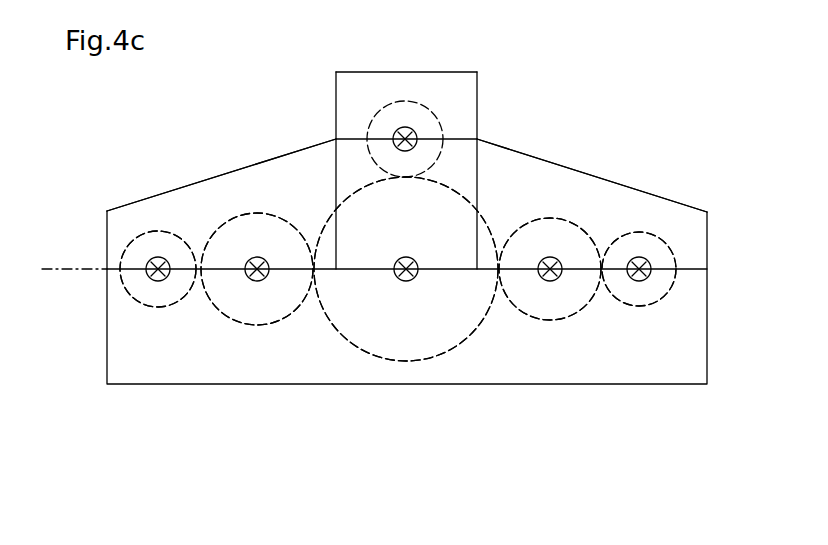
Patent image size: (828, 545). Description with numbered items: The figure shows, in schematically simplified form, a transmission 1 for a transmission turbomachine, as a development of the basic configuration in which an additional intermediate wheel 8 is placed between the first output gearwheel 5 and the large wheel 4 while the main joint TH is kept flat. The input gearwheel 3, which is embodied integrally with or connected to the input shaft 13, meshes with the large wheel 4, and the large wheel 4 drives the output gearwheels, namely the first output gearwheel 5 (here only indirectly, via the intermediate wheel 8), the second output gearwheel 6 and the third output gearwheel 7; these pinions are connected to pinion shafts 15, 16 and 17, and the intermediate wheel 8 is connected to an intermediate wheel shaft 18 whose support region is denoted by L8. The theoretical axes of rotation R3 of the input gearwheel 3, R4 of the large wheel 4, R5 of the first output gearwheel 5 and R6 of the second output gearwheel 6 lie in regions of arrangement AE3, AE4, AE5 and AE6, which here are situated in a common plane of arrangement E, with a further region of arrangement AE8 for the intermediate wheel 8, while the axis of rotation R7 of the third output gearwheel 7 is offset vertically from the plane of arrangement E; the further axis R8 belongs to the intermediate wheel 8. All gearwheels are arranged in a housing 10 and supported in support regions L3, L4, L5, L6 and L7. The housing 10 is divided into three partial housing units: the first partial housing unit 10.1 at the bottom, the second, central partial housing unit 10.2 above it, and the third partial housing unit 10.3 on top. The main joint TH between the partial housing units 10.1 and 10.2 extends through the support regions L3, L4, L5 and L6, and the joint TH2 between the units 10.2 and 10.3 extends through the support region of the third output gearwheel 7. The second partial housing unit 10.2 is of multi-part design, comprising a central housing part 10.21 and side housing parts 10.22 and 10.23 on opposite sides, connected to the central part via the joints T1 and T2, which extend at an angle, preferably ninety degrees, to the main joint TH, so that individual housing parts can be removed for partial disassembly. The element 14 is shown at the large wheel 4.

The transmission 1 is at (587, 85).
The input gearwheel 3 is at (592, 294).
The large wheel 4 is at (463, 313).
The first output gearwheel 5 is at (193, 290).
The second output gearwheel 6 is at (674, 284).
The third output gearwheel 7 is at (471, 112).
The intermediate wheel 8 is at (302, 295).
The housing 10 is at (169, 151).
The first partial housing unit 10.1 is at (342, 384).
The second partial housing unit 10.2 is at (616, 150).
The central housing part 10.21 is at (352, 167).
The side housing part 10.22 is at (222, 200).
The side housing part 10.23 is at (570, 196).
The third partial housing unit 10.3 is at (477, 113).
The input shaft 13 is at (559, 278).
The center of fourth opening 14 is at (415, 278).
The pinion shaft 15 is at (167, 278).
The pinion shaft 16 is at (648, 278).
The pinion shaft 17 is at (446, 115).
The intermediate wheel shaft 18 is at (266, 278).
The support region L3 is at (542, 288).
The support region L4 is at (398, 288).
The support region L5 is at (150, 288).
The support region L6 is at (631, 288).
The support region L7 is at (403, 108).
The support region L8 is at (249, 288).
The axis of rotation R3 is at (558, 280).
The axis of rotation R4 is at (414, 280).
The axis of rotation R5 is at (166, 280).
The axis of rotation R6 is at (647, 280).
The axis of rotation R7 is at (397, 130).
The radius of eighth opening R8 is at (265, 280).
The joint T1 is at (335, 169).
The joint T2 is at (480, 165).
The main joint TH is at (117, 252).
The joint TH2 is at (352, 124).
The plane of arrangement E is at (59, 262).
The region of arrangement AE3 is at (525, 258).
The region of arrangement AE4 is at (369, 258).
The region of arrangement AE5 is at (189, 253).
The region of arrangement AE6 is at (612, 247).
The outlet area of eighth opening AE8 is at (287, 253).